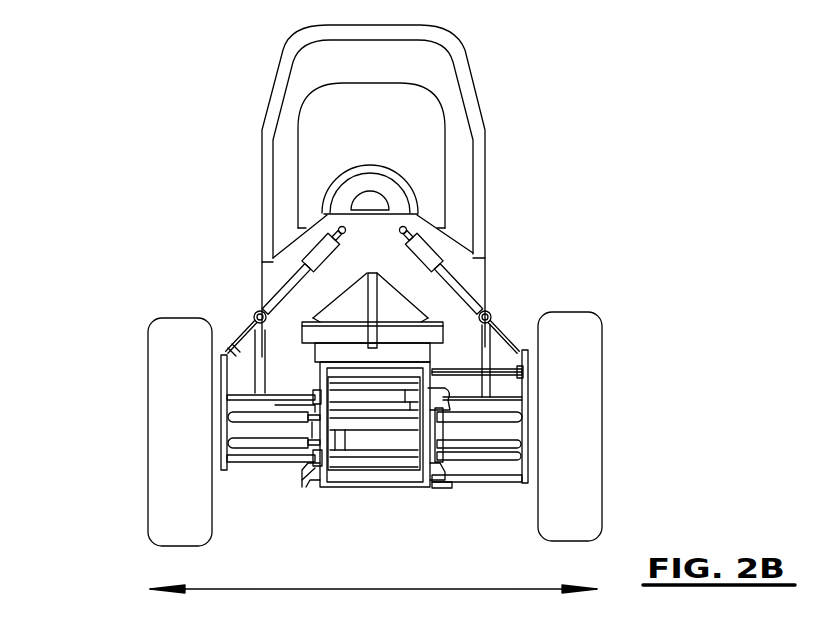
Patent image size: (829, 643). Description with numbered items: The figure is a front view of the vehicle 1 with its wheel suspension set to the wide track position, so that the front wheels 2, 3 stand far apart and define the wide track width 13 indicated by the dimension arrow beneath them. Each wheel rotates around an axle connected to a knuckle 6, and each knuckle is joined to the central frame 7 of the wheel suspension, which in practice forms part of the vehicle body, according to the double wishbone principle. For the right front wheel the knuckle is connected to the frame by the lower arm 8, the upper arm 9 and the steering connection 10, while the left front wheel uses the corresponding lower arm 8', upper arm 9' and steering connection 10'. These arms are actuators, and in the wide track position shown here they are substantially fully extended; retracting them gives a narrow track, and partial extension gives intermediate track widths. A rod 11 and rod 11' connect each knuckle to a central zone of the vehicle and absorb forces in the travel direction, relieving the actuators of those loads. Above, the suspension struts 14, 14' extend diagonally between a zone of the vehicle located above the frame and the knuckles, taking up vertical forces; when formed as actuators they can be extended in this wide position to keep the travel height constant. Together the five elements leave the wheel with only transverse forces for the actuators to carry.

The vehicle 1 is at (628, 150).
The left front wheel 2 is at (577, 448).
The right front wheel 3 is at (163, 352).
The knuckle 6 is at (530, 373).
The central frame 7 is at (326, 473).
The lower arm 8 is at (274, 501).
The lower arm 8' is at (477, 525).
The upper arm 9 is at (264, 341).
The upper arm 9' is at (488, 319).
The steering connection 10 is at (202, 371).
The steering connection 10' is at (478, 448).
The rod 11 is at (201, 420).
The rod 11' is at (547, 435).
The wide track width 13 is at (373, 574).
The suspension strut 14 is at (262, 280).
The suspension strut 14' is at (484, 283).